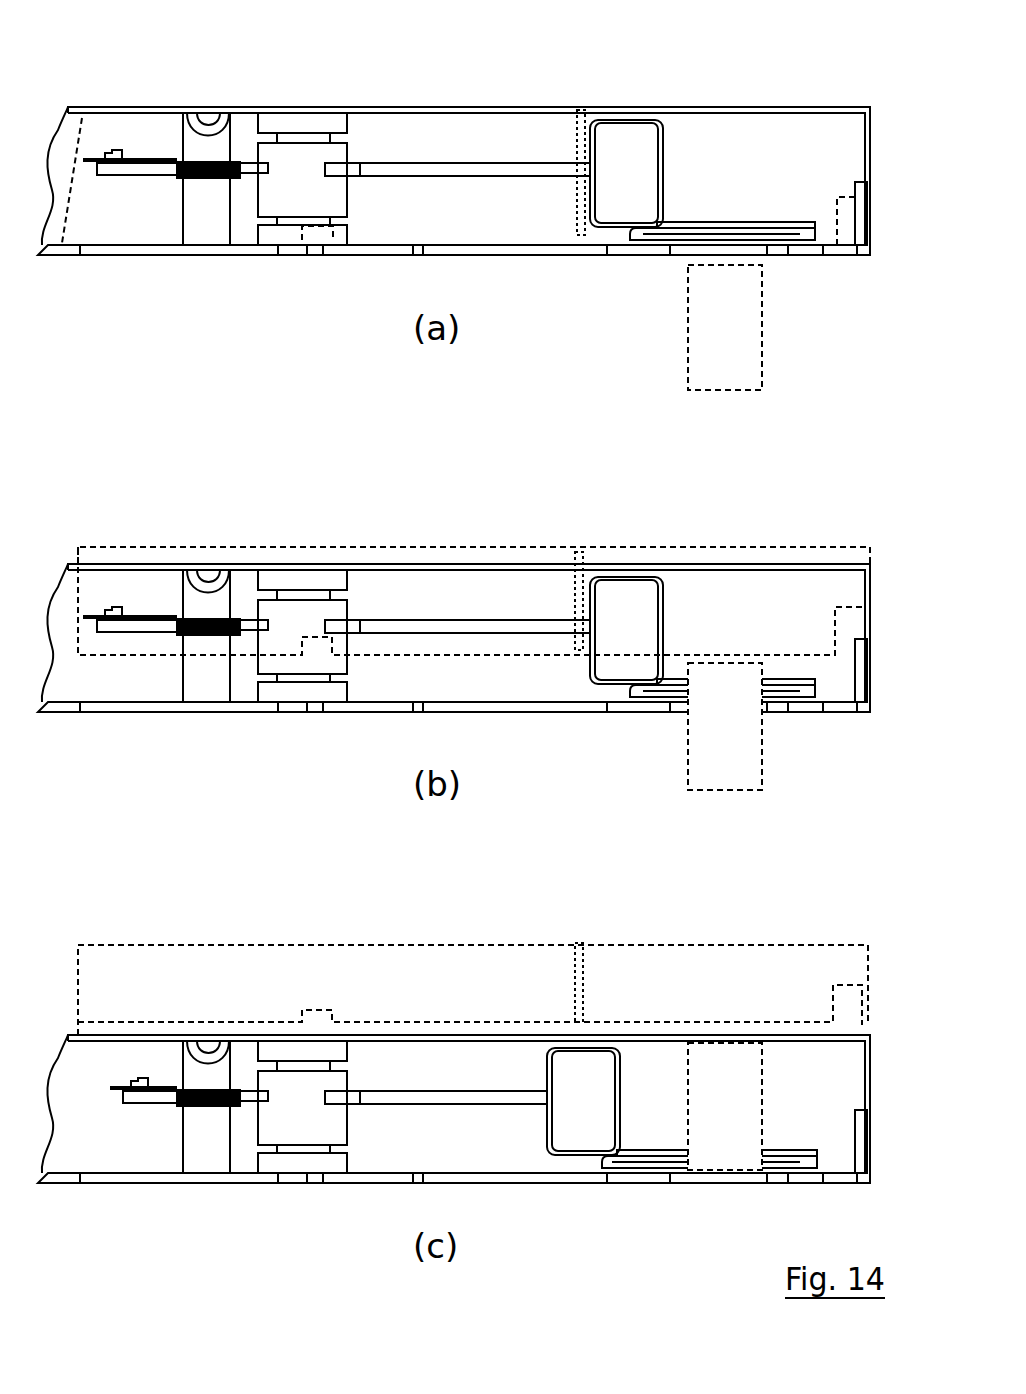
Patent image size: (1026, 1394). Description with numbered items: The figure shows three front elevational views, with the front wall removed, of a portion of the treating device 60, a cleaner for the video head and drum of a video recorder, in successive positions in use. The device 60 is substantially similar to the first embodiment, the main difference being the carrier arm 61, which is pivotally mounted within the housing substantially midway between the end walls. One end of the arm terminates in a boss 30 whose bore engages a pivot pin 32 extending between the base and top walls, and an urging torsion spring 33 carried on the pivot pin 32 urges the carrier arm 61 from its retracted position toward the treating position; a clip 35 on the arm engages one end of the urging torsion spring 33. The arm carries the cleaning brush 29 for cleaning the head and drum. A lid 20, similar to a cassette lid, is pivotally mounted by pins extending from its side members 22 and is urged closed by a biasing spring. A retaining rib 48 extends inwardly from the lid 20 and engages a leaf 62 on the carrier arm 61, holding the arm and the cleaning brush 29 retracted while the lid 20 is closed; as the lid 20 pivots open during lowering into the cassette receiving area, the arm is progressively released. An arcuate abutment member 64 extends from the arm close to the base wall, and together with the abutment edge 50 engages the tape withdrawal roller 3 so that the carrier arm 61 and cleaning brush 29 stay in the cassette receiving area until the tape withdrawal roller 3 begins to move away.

The tape withdrawal roller 3 is at (750, 353).
The lid 20 is at (447, 107).
The side member 22 is at (873, 145).
The cleaning brush 29 is at (607, 205).
The boss 30 is at (323, 153).
The pivot pin 32 is at (285, 135).
The urging torsion spring 33 is at (137, 165).
The clip 35 is at (83, 158).
The retaining rib 48 is at (578, 130).
The abutment edge 50 is at (797, 240).
The treating device 60 is at (155, 56).
The carrier arm 61 is at (383, 170).
The leaf 62 is at (525, 178).
The arcuate abutment member 64 is at (643, 240).